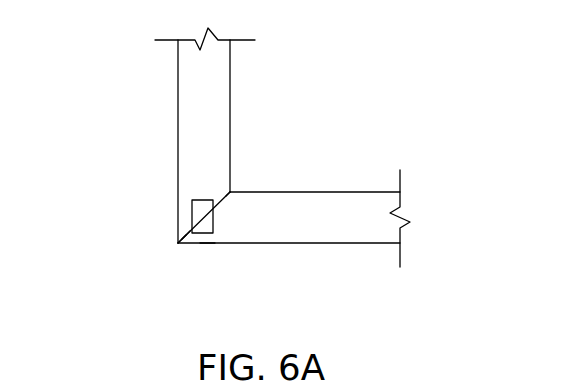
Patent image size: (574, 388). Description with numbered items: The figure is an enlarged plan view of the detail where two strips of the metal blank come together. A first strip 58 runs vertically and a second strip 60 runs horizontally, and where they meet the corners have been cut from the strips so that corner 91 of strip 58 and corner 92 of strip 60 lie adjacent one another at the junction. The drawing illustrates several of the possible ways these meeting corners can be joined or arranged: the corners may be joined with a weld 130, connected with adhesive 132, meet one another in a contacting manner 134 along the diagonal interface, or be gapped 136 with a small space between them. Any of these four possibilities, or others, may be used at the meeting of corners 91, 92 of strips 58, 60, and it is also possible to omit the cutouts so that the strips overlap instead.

The strip 58 is at (190, 94).
The strip 60 is at (358, 230).
The corner 91 is at (187, 233).
The corner 92 is at (210, 245).
The weld 130 is at (182, 245).
The adhesive 132 is at (202, 200).
The contacting manner 134 is at (226, 199).
The gap 136 is at (231, 190).